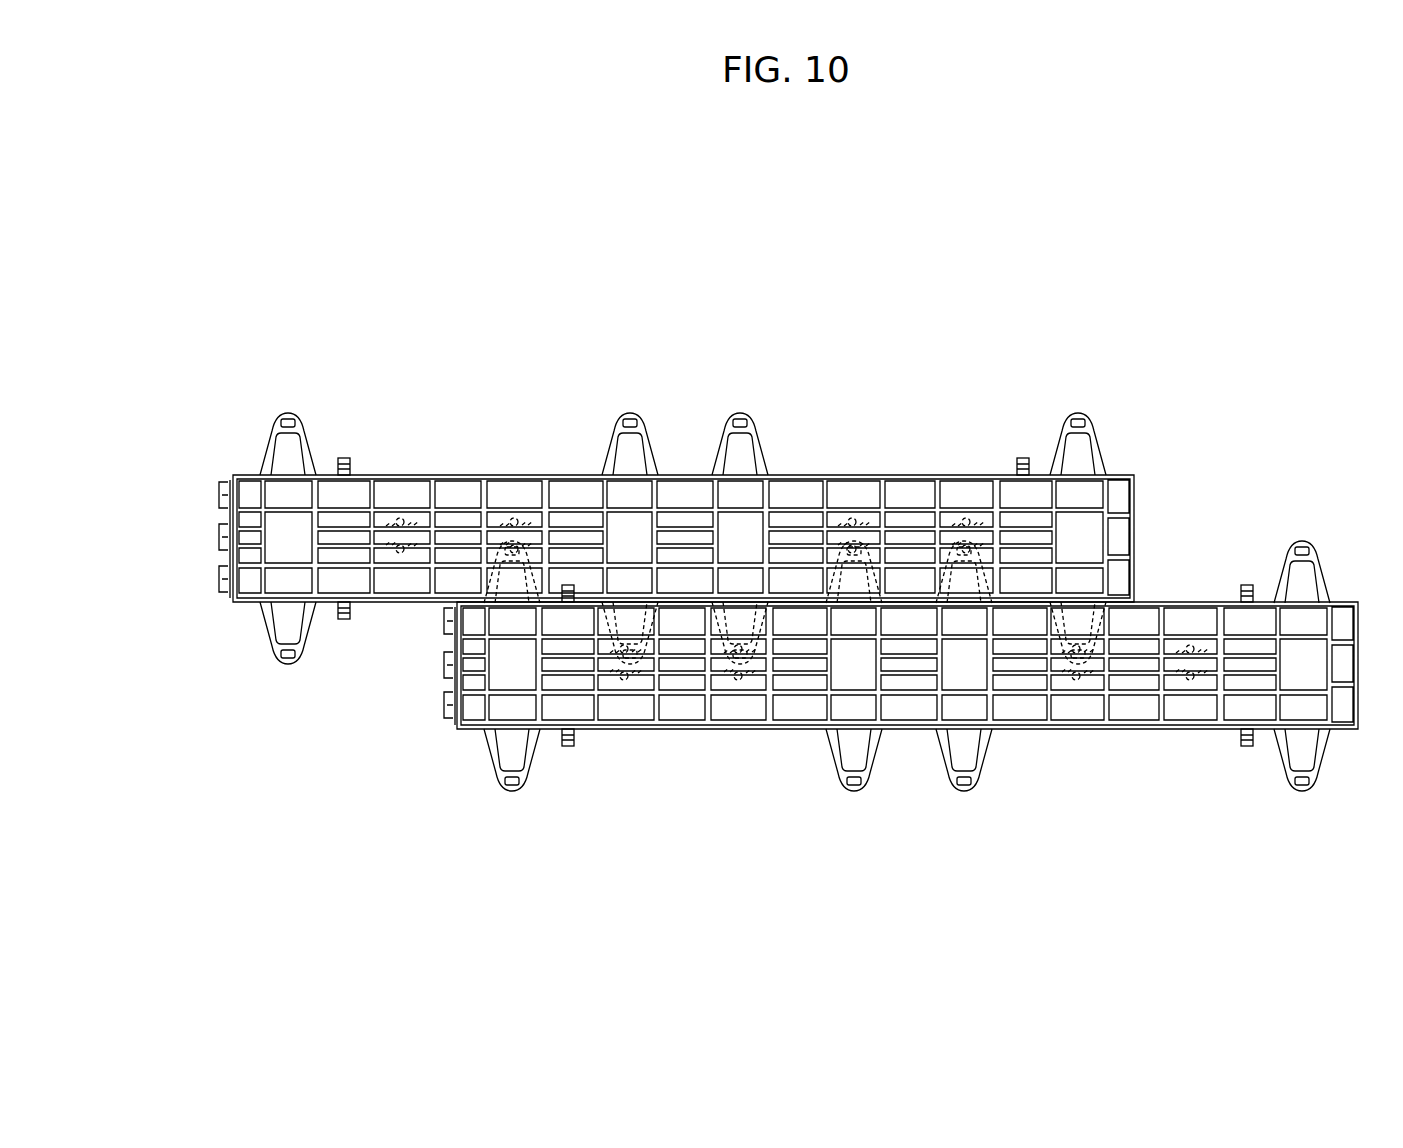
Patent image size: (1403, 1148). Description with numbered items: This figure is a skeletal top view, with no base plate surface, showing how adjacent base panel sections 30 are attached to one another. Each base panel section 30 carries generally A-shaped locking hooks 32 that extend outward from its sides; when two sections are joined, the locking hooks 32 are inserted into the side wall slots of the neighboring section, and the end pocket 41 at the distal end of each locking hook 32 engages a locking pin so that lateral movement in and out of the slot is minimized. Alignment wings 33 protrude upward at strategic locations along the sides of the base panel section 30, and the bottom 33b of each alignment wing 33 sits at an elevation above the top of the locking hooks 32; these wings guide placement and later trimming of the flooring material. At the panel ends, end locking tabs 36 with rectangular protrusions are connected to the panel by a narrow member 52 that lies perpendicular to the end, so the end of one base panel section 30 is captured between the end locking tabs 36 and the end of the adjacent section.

The base panel section 30 is at (684, 398).
The locking hook 32 is at (757, 430).
The alignment wing 33 is at (1022, 452).
The bottom of alignment wing 33b is at (350, 473).
The end locking tab 36 is at (210, 478).
The end pocket 41 is at (1085, 428).
The narrow member 52 is at (228, 584).